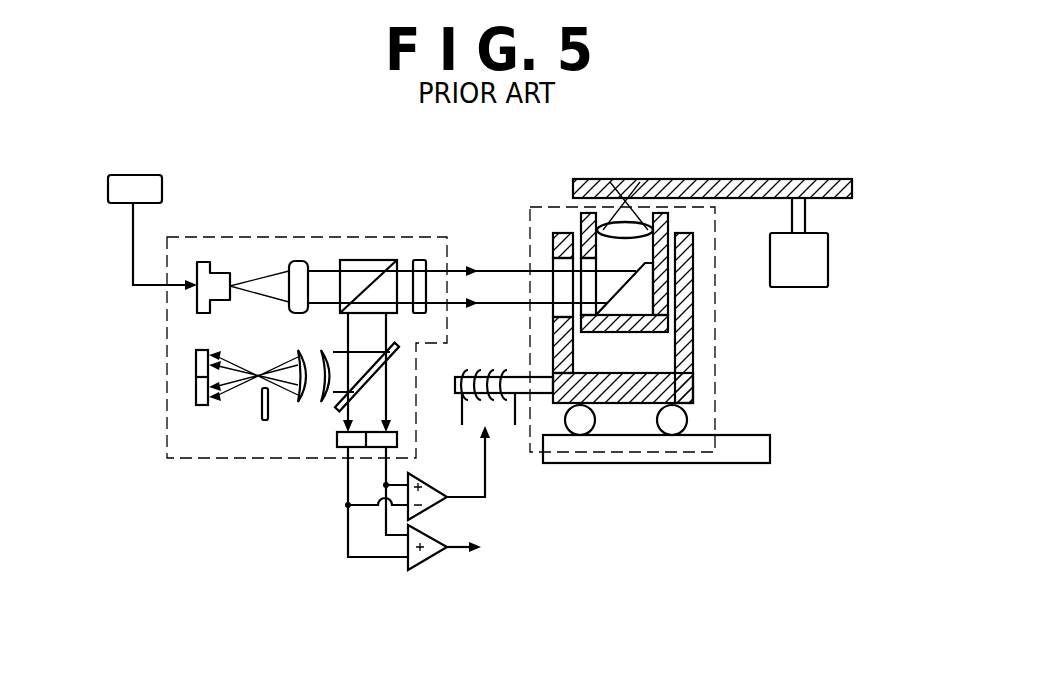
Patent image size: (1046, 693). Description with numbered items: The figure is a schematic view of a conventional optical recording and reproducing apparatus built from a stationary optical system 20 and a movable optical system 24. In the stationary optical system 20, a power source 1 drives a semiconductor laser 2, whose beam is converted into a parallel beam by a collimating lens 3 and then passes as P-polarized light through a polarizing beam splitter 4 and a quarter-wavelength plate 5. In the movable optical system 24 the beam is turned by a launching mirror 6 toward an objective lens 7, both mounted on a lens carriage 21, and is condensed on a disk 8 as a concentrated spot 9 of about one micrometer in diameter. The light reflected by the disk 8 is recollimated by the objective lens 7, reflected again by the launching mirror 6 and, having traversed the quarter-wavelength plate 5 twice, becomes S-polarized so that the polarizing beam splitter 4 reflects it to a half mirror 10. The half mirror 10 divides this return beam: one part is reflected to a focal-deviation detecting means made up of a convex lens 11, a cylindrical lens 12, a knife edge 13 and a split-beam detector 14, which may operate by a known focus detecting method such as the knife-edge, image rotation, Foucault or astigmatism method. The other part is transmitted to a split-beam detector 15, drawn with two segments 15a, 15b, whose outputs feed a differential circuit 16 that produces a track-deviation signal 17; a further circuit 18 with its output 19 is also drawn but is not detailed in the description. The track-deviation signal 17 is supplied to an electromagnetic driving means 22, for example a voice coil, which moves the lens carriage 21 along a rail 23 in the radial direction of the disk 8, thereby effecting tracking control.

The power source 1 is at (156, 175).
The semiconductor laser 2 is at (208, 262).
The collimating lens 3 is at (297, 261).
The polarizing beam splitter 4 is at (362, 260).
The quarter-wavelength plate 5 is at (417, 260).
The launching mirror 6 is at (645, 295).
The objective lens 7 is at (637, 222).
The disk 8 is at (724, 183).
The concentrated spot 9 is at (626, 198).
The half mirror 10 is at (373, 380).
The convex lens 11 is at (323, 400).
The cylindrical lens 12 is at (300, 404).
The knife edge 13 is at (262, 408).
The split-beam detector 14 is at (196, 388).
The split-beam detector 15 is at (387, 500).
The photodetector segment 15a is at (397, 440).
The photodetector segment 15b is at (342, 447).
The differential circuit 16 is at (432, 512).
The track-deviation signal 17 is at (487, 497).
The adder amplifier 18 is at (430, 565).
The reproduced signal output 19 is at (462, 549).
The stationary optical system 20 is at (447, 237).
The lens carriage 21 is at (693, 365).
The electromagnetic driving means 22 is at (492, 412).
The rail 23 is at (660, 463).
The movable optical system 24 is at (541, 207).